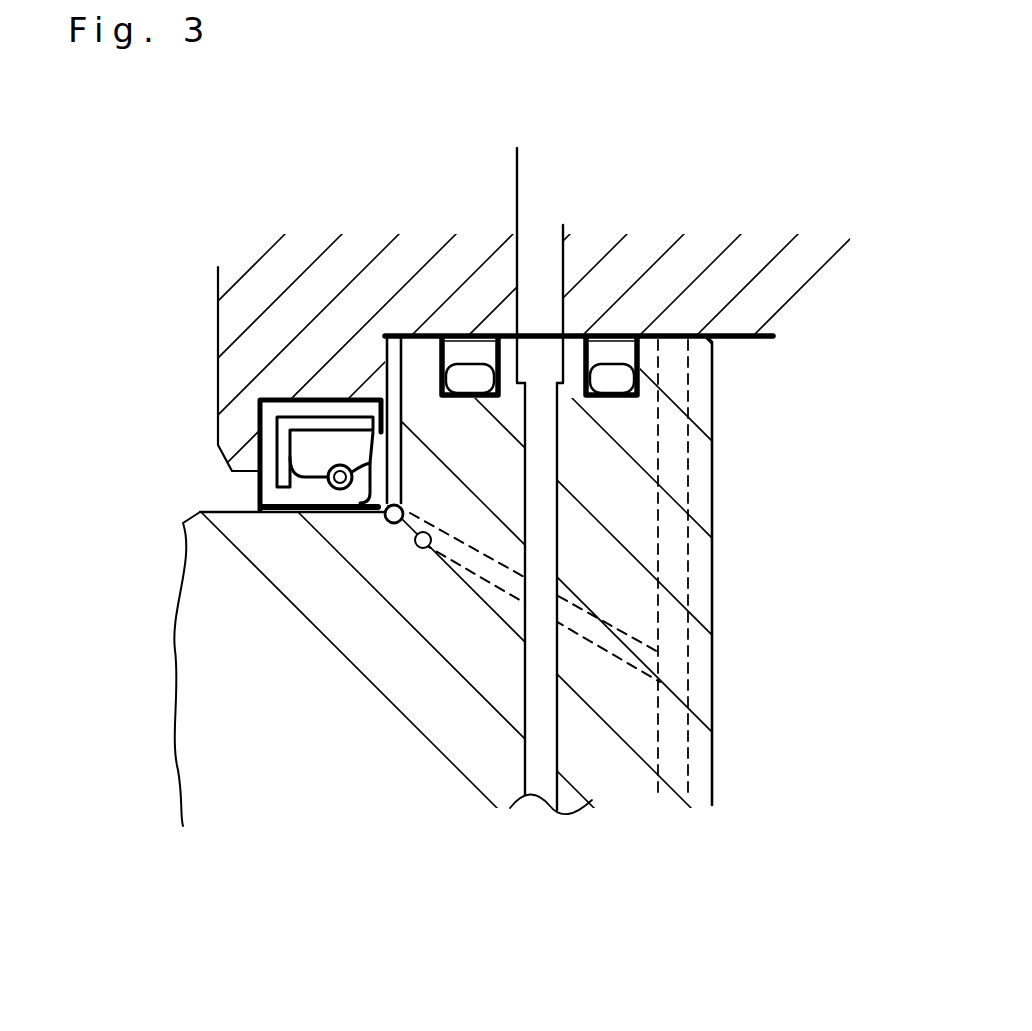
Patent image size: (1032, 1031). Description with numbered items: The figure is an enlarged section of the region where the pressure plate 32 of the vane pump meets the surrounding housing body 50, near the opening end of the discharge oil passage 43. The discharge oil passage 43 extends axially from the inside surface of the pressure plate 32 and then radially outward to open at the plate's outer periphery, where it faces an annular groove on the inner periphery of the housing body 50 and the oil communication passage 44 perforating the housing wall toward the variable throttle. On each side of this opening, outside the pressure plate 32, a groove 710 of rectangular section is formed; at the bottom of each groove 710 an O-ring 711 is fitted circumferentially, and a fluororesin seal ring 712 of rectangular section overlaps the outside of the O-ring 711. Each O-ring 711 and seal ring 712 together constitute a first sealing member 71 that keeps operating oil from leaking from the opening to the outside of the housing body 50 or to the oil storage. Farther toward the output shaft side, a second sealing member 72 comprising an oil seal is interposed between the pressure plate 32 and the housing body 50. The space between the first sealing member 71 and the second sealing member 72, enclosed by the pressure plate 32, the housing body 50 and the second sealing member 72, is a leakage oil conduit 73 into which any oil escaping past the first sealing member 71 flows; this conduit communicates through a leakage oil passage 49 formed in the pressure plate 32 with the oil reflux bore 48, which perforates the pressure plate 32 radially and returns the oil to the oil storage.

The pressure plate 32 is at (203, 750).
The discharge oil passage 43 is at (527, 680).
The oil communication passage 44 is at (588, 233).
The oil reflux bore 48 is at (683, 580).
The leakage oil passage 49 is at (431, 548).
The housing body 50 is at (232, 327).
The first sealing member 71 is at (510, 355).
The second sealing member 72 is at (257, 473).
The leakage oil conduit 73 is at (385, 400).
The groove 710 is at (440, 372).
The O-ring 711 is at (461, 385).
The seal ring 712 is at (470, 347).